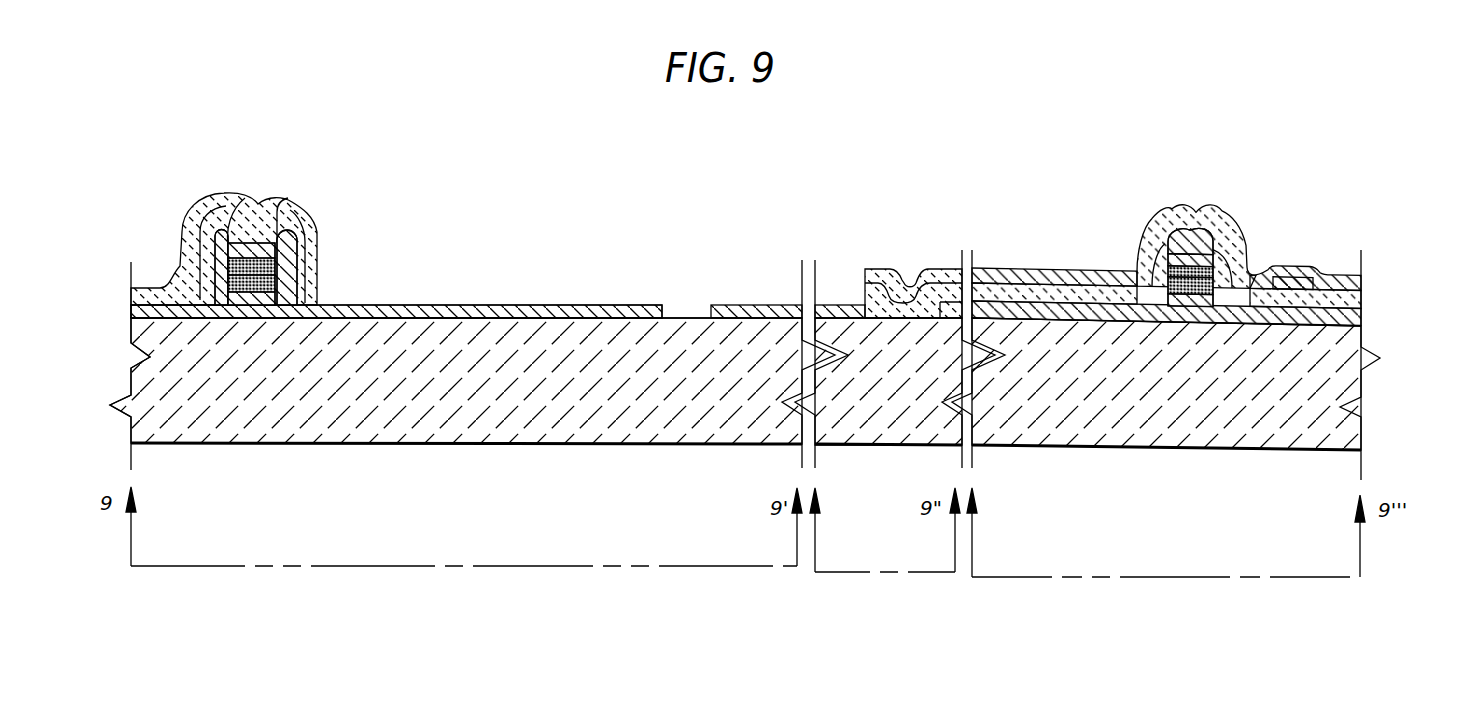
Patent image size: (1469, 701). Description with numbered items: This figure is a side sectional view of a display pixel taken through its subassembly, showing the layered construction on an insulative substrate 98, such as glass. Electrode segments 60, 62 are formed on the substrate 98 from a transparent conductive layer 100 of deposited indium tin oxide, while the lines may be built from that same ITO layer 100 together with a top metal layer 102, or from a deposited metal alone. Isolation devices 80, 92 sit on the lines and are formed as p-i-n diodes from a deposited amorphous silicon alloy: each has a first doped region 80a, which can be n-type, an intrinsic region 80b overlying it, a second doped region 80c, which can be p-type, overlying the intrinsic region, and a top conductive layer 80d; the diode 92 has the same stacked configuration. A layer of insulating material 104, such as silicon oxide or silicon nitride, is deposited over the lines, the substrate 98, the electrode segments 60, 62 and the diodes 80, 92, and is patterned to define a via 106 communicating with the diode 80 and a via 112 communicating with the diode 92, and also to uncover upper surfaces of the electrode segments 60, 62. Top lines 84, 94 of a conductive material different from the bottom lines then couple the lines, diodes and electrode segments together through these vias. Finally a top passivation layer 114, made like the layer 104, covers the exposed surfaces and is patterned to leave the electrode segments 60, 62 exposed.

The electrode segment 60 is at (578, 305).
The electrode segment 62 is at (752, 305).
The isolation device 80 is at (260, 227).
The first doped region 80a is at (265, 298).
The intrinsic region 80b is at (268, 282).
The second doped region 80c is at (268, 265).
The top conductive layer 80d is at (273, 250).
The top line 84 is at (250, 245).
The isolation device 92 is at (1225, 218).
The top line 94 is at (1330, 267).
The insulative substrate 98 is at (1332, 382).
The transparent conductive layer 100 is at (1001, 305).
The top metal layer 102 is at (1032, 292).
The insulating layer 104 is at (150, 313).
The via 106 is at (247, 240).
The via 112 is at (1238, 232).
The top passivation layer 114 is at (220, 202).